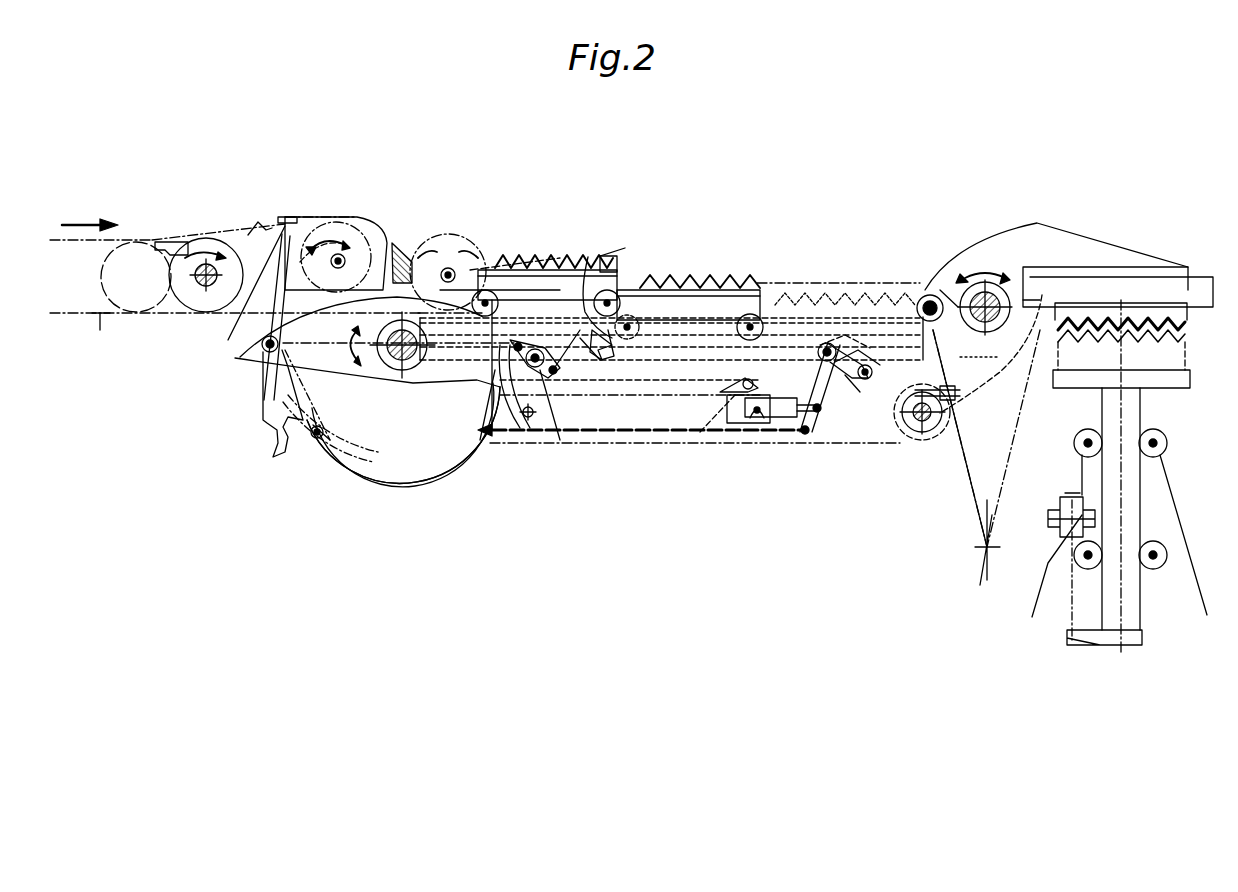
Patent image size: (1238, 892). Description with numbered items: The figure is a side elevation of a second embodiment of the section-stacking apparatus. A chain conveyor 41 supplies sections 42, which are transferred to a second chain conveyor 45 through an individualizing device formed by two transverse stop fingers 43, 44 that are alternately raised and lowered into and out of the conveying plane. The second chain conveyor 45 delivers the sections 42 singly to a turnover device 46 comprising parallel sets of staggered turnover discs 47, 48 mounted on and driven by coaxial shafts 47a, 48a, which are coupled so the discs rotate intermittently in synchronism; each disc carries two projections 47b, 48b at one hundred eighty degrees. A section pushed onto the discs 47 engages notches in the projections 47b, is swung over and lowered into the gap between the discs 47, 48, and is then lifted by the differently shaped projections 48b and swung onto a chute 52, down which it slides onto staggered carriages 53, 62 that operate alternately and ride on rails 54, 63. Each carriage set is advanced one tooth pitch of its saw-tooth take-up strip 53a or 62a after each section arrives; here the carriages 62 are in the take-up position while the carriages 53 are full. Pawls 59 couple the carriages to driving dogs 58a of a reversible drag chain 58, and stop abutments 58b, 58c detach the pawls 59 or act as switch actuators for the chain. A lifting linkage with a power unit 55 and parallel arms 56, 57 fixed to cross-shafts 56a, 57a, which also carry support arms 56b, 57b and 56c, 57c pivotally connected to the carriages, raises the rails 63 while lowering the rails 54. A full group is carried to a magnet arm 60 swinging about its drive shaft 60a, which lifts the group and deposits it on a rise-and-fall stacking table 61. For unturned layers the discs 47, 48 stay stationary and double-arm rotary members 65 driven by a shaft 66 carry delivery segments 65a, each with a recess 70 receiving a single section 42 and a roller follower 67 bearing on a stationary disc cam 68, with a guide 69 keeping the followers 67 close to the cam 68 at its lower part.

The chain conveyor 41 is at (100, 316).
The sections 42 is at (265, 230).
The finger 43 is at (158, 242).
The finger 44 is at (185, 245).
The second chain conveyor 45 is at (213, 233).
The turnover device 46 is at (418, 258).
The turnover disc 47 is at (347, 262).
The coaxial shaft 47a is at (333, 263).
The projection 47b is at (233, 313).
The turnover disc 48 is at (478, 292).
The coaxial shaft 48a is at (457, 260).
The projection 48b is at (540, 262).
The chute 52 is at (517, 258).
The carriage 53 is at (713, 303).
The saw-tooth take-up strip 53a is at (745, 290).
The rail 54 is at (688, 350).
The power unit 55 is at (743, 407).
The arm 56 is at (837, 408).
The cross-shaft 56a is at (840, 367).
The support arm 56b is at (840, 357).
The support arm 56c is at (860, 373).
The arm 57 is at (528, 420).
The cross-shaft 57a is at (545, 398).
The support arm 57b is at (490, 400).
The support arm 57c is at (553, 372).
The drag chain 58 is at (885, 443).
The driving dog 58a is at (698, 432).
The stop abutment 58b is at (905, 397).
The stop abutment 58c is at (605, 262).
The pawl 59 is at (593, 340).
The magnet arm 60 is at (1020, 243).
The drive shaft 60a is at (975, 300).
The rise-and-fall stacking table 61 is at (1145, 336).
The carriage 62 is at (600, 282).
The saw-tooth take-up strip 62a is at (593, 255).
The rail 63 is at (587, 347).
The double-arm rotary member 65 is at (328, 357).
The delivery segment 65a is at (320, 430).
The shaft 66 is at (410, 355).
The roller follower 67 is at (318, 440).
The disc cam 68 is at (393, 433).
The guide 69 is at (457, 447).
The recess 70 is at (262, 447).